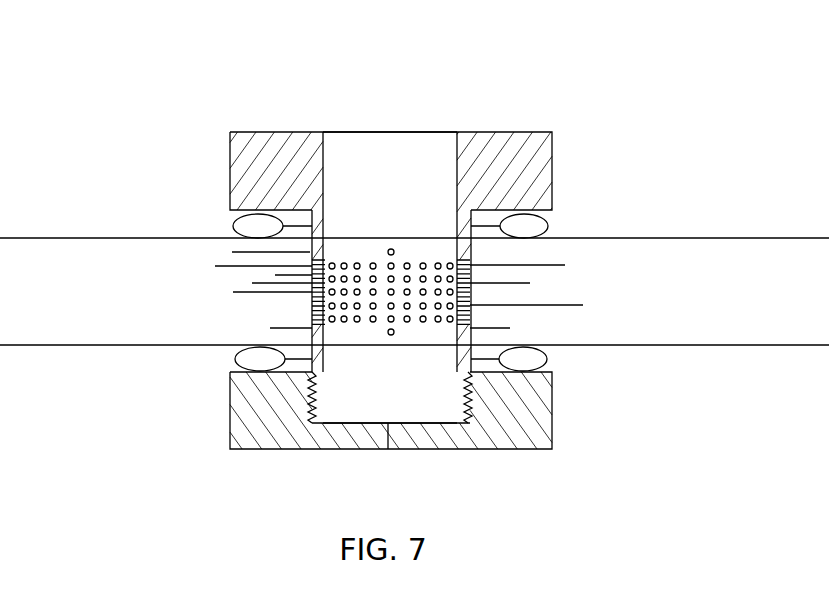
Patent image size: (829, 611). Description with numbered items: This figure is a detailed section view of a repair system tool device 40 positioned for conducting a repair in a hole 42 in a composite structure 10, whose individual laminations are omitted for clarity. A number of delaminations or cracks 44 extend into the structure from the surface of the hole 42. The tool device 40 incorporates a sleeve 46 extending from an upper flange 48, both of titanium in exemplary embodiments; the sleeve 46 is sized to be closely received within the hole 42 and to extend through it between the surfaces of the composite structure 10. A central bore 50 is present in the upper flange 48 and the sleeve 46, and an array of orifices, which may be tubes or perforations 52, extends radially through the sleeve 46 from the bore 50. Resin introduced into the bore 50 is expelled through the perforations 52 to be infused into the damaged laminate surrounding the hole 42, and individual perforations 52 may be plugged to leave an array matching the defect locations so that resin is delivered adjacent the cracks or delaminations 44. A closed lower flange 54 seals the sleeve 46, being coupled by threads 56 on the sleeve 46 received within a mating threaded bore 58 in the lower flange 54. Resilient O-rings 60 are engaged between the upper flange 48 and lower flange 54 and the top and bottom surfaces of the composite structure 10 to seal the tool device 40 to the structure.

The composite structure 10 is at (698, 238).
The repair system tool device 40 is at (541, 95).
The hole 42 is at (473, 252).
The delaminations or cracks 44 is at (228, 267).
The sleeve 46 is at (317, 228).
The upper flange 48 is at (267, 160).
The central bore 50 is at (403, 162).
The perforations 52 is at (327, 325).
The lower flange 54 is at (530, 423).
The threads 56 is at (310, 405).
The threaded bore 58 is at (470, 405).
The O-rings 60 is at (252, 226).